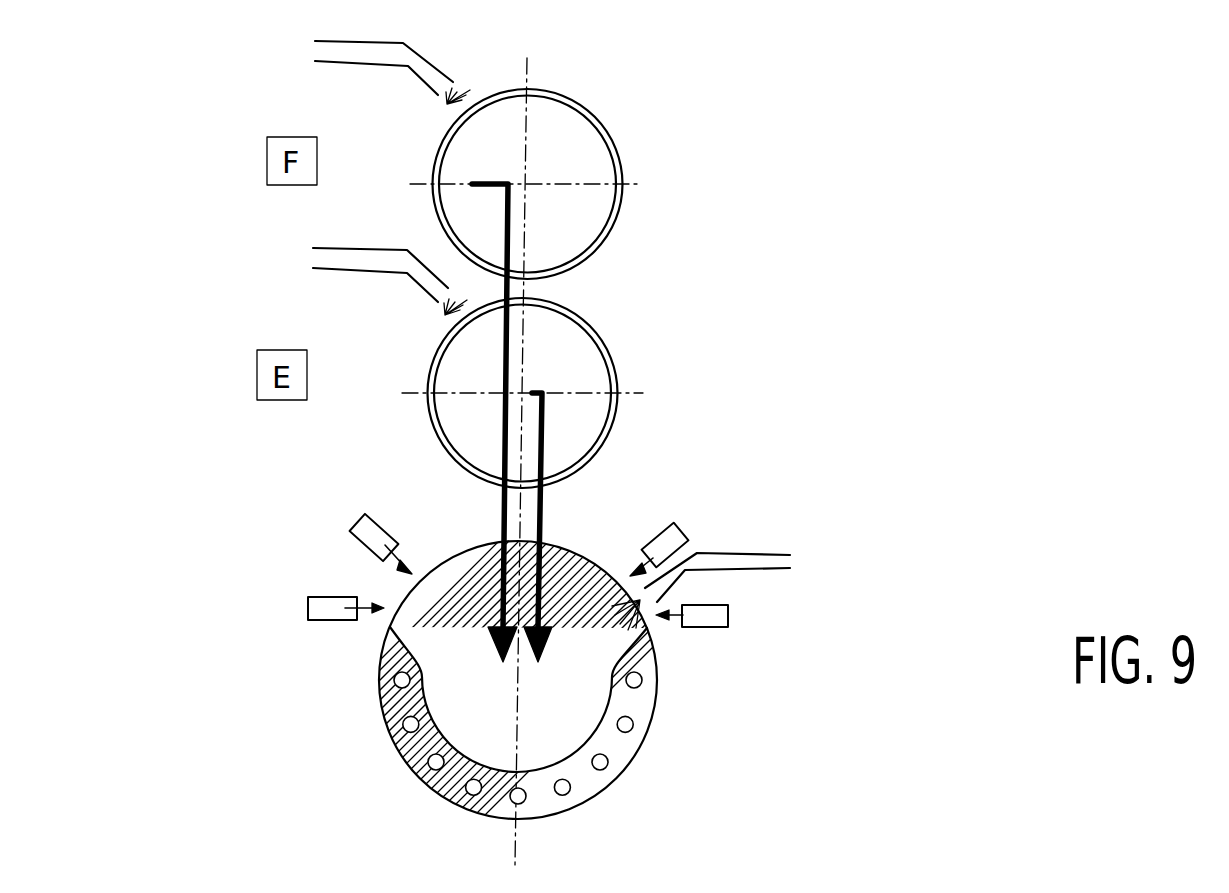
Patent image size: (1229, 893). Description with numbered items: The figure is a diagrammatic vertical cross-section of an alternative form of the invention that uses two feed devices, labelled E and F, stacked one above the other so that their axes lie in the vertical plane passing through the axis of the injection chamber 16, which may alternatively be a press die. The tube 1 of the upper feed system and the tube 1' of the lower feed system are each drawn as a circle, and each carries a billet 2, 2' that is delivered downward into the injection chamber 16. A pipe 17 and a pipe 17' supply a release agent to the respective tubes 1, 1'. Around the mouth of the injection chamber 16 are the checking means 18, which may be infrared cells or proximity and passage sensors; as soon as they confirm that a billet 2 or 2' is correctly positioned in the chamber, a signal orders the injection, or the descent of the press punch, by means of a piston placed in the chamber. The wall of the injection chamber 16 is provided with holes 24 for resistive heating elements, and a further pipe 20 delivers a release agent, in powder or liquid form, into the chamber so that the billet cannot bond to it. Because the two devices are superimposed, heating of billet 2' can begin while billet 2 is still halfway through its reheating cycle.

The tube of first feed system 1 is at (565, 184).
The billet 2 is at (584, 423).
The tube of second feed system 1' is at (566, 393).
The billet 2' is at (617, 527).
The release agent supply pipe 17 is at (356, 67).
The release agent supply pipe 17' is at (355, 271).
The billet position checking means 18 is at (350, 528).
The release agent pipe 20 is at (790, 558).
The holes for resistive heating elements 24 is at (637, 723).
The injection chamber 16 is at (633, 770).